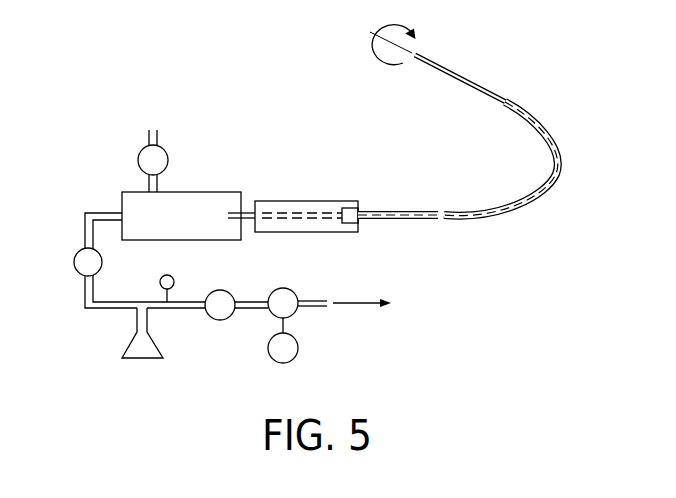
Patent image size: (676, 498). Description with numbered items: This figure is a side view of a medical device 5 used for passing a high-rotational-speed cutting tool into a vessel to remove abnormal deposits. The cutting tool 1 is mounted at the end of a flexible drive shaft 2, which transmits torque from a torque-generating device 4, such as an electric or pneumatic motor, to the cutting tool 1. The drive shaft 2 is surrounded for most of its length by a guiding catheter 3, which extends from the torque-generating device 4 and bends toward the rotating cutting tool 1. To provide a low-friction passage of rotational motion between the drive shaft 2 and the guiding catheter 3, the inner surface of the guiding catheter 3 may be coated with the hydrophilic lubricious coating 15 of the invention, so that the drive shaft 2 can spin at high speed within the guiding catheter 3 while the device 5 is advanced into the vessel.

The cutting tool 1 is at (416, 47).
The drive shaft 2 is at (485, 88).
The guiding catheter 3 is at (526, 142).
The torque-generating device 4 is at (330, 200).
The medical device 5 is at (256, 217).
The lubricious coating 15 is at (557, 152).